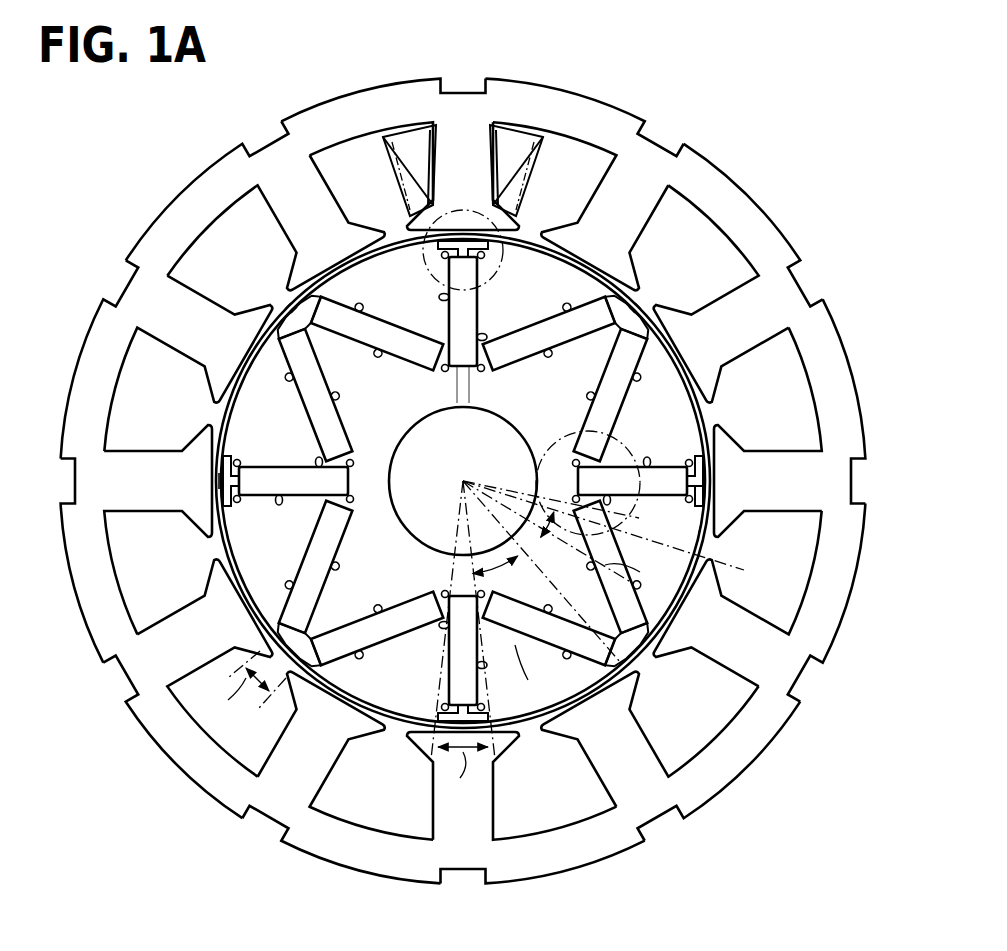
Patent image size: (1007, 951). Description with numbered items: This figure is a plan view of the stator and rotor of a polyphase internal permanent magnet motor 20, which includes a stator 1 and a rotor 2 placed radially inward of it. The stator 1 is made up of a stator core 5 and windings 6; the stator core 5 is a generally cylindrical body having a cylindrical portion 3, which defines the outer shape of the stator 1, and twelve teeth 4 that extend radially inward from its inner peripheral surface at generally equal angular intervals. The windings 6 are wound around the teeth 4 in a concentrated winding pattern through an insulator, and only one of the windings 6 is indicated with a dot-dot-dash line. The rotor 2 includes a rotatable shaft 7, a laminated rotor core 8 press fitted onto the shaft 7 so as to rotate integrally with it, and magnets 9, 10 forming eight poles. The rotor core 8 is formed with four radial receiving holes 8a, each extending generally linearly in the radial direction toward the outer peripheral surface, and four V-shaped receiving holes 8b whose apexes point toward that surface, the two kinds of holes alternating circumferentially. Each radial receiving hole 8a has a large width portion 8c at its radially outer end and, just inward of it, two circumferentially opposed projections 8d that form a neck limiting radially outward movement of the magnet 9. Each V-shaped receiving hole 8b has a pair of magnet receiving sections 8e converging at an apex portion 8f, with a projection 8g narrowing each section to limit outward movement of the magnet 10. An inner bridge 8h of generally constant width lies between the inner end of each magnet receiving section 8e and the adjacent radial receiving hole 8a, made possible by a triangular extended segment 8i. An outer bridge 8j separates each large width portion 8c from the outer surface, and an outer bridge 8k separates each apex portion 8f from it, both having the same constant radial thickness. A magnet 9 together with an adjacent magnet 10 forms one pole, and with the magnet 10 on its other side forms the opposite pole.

The stator 1 is at (464, 469).
The rotor 2 is at (505, 473).
The cylindrical portion 3 is at (464, 469).
The teeth 4 is at (466, 122).
The stator core 5 is at (463, 478).
The windings 6 is at (548, 133).
The rotatable shaft 7 is at (400, 505).
The rotor core 8 is at (464, 473).
The radial receiving hole 8a is at (478, 263).
The V-shaped receiving hole 8b is at (407, 352).
The large width portion 8c is at (215, 492).
The circumferentially opposed projections 8d is at (700, 480).
The magnet receiving sections 8e is at (363, 325).
The apex portion 8f is at (292, 318).
The projection 8g is at (285, 308).
The inner bridge 8h is at (472, 375).
The extended segment 8i is at (442, 375).
The outer bridge 8j is at (697, 497).
The outer bridge 8k is at (640, 322).
The magnets 9 is at (445, 262).
The magnets 10 is at (320, 300).
The motor 20 is at (464, 460).